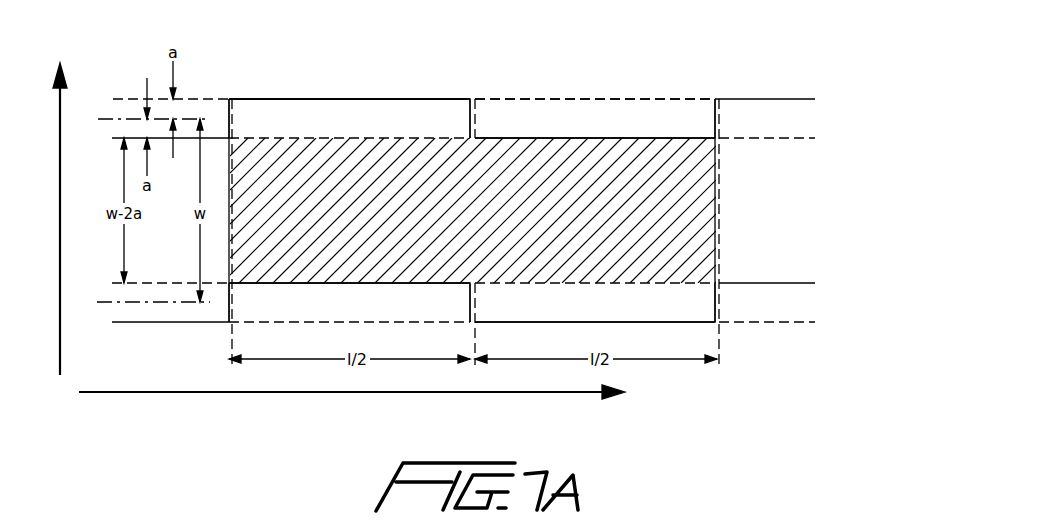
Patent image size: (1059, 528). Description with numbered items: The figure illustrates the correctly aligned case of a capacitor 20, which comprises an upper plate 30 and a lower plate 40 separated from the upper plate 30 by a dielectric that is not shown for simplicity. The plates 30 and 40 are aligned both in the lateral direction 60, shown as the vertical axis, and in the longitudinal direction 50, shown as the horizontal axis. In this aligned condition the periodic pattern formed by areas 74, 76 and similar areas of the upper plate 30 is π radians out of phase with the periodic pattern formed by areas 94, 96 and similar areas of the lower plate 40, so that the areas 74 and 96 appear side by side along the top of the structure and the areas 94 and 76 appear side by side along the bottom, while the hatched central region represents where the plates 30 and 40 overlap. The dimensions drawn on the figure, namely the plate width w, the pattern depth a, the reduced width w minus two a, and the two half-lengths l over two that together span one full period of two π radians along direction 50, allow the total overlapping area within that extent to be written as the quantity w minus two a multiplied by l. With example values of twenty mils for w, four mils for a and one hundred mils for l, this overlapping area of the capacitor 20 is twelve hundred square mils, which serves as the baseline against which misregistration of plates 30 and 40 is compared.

The capacitor 20 is at (492, 64).
The upper plate 30 is at (254, 99).
The lower plate 40 is at (646, 99).
The direction 50 is at (364, 393).
The direction 60 is at (61, 210).
The area 74 is at (338, 124).
The area 76 is at (571, 310).
The area 94 is at (338, 310).
The area 96 is at (571, 124).